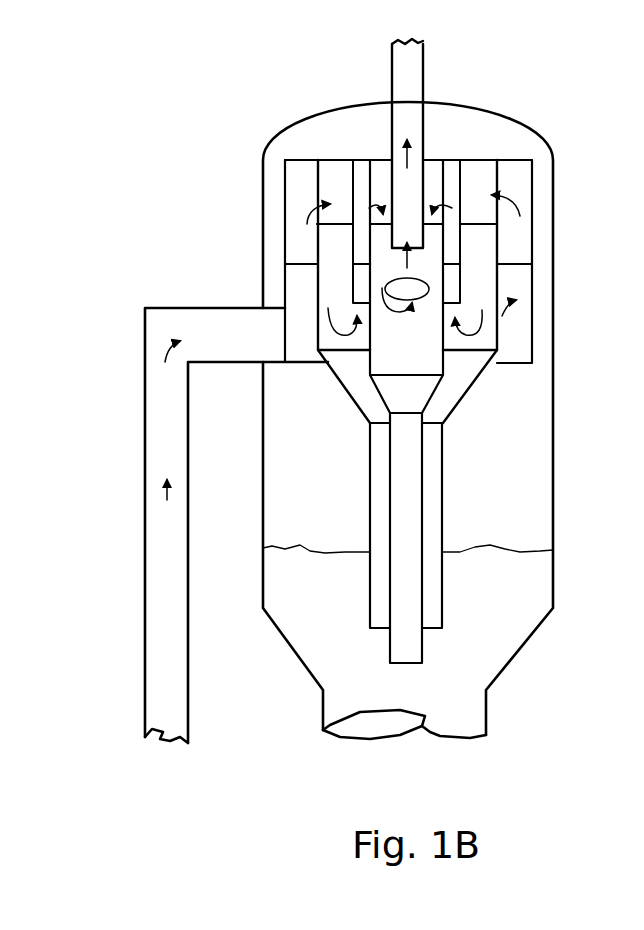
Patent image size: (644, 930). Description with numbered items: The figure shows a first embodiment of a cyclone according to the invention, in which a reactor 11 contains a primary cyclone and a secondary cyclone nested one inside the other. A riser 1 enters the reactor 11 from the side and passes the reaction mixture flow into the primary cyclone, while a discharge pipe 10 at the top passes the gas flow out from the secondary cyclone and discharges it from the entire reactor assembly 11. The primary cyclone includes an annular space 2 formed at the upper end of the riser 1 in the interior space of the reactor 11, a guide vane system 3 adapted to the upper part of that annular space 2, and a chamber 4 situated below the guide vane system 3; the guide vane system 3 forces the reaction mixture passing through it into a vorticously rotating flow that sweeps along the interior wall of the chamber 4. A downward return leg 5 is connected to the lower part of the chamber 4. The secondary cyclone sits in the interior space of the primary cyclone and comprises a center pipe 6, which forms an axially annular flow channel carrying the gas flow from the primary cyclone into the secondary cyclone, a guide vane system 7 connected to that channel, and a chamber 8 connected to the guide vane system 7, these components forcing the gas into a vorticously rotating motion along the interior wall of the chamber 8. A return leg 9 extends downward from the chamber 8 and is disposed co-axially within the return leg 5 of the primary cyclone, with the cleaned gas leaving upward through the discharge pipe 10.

The riser 1 is at (168, 558).
The annular space 2 is at (518, 286).
The guide vane system 3 is at (518, 183).
The chamber 4 is at (497, 338).
The return leg 5 is at (442, 470).
The center pipe 6 is at (450, 280).
The guide vane system 7 is at (370, 193).
The chamber 8 is at (443, 338).
The return leg 9 is at (422, 505).
The discharge pipe 10 is at (392, 88).
The reactor 11 is at (263, 250).